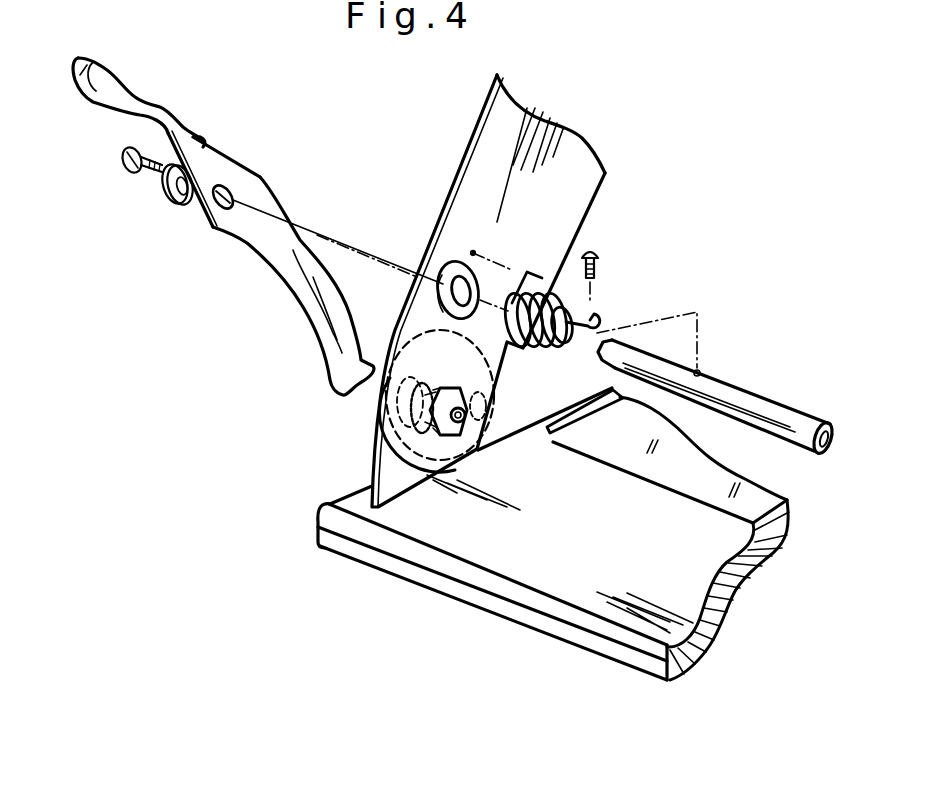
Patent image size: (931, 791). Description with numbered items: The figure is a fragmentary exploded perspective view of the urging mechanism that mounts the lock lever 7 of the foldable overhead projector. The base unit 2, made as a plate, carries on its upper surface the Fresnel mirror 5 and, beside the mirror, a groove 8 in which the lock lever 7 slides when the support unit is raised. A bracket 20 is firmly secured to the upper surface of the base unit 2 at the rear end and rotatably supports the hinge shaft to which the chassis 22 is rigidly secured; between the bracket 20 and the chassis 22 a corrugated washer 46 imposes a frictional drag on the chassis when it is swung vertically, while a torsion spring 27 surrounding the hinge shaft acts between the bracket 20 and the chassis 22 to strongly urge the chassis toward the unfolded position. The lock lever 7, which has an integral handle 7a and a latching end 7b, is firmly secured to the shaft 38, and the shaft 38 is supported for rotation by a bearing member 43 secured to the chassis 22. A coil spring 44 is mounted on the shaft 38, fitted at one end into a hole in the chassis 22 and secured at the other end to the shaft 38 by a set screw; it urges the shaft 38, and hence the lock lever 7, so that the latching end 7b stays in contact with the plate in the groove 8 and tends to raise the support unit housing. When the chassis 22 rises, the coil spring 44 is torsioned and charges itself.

The base unit 2 is at (504, 619).
The Fresnel mirror 5 is at (775, 497).
The lock lever 7 is at (223, 215).
The handle 7a is at (118, 88).
The latching end 7b is at (333, 381).
The groove 8 is at (578, 420).
The bracket 20 is at (485, 353).
The chassis 22 is at (564, 132).
The torsion spring 27 is at (393, 418).
The shaft 38 is at (807, 422).
The bearing member 43 is at (448, 265).
The coil spring 44 is at (547, 300).
The corrugated washer 46 is at (418, 427).